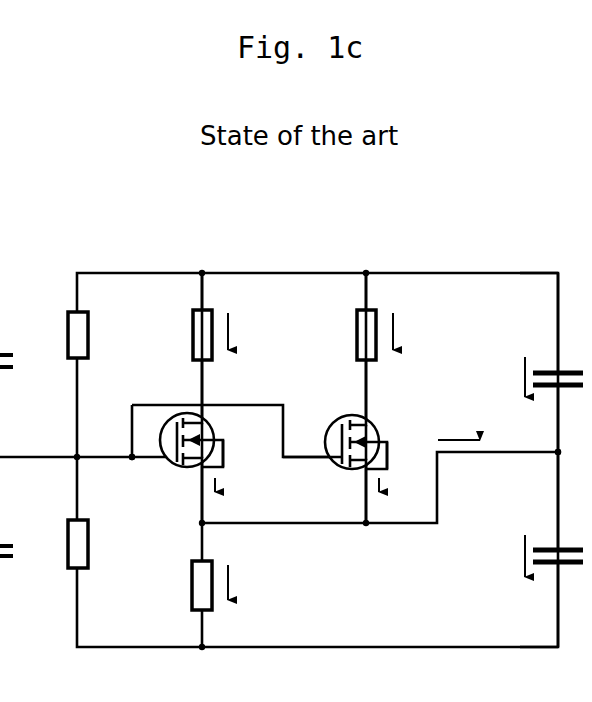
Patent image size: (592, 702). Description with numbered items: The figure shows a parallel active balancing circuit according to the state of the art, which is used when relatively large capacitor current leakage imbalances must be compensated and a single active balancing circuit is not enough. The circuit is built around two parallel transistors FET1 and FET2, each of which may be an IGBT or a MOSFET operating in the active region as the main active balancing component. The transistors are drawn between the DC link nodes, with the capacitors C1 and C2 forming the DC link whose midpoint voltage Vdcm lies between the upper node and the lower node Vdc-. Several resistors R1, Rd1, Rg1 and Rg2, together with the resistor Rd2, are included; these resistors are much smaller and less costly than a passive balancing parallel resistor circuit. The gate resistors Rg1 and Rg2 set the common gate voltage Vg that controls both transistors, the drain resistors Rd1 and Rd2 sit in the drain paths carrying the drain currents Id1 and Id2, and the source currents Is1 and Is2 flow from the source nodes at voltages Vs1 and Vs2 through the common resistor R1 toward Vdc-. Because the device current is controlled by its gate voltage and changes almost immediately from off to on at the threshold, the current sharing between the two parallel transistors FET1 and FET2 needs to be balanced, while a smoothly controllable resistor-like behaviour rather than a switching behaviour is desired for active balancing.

The resistor Rg1 is at (55, 335).
The resistor Rg2 is at (55, 544).
The resistor Rd1 is at (179, 335).
The drain resistor 2 Rd2 is at (344, 335).
The resistor R1 is at (189, 585).
The transistor FET1 is at (191, 398).
The transistor FET2 is at (335, 398).
The capacitor C1 is at (541, 362).
The capacitor C2 is at (540, 549).
The drain current 1 Id1 is at (243, 331).
The drain current 2 Id2 is at (407, 331).
The source current 1 Is1 is at (231, 492).
The source current 2 Is2 is at (394, 492).
The gate voltage node Vg is at (119, 448).
The source voltage 1 Vs1 is at (238, 457).
The source voltage 2 Vs2 is at (403, 458).
The DC link midpoint voltage Vdcm is at (534, 464).
The negative DC link voltage Vdc- is at (537, 636).